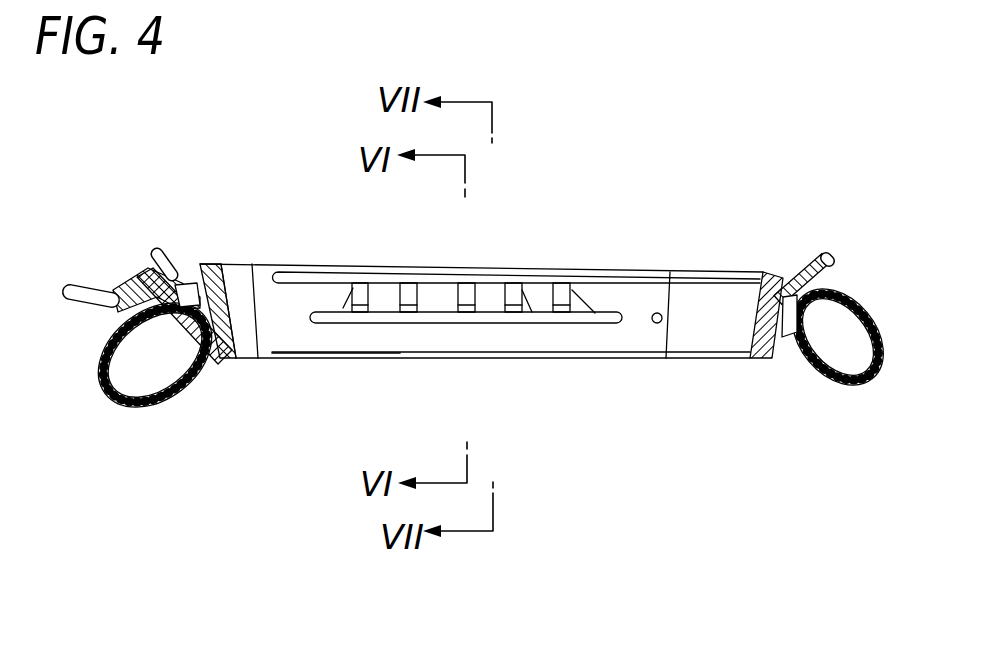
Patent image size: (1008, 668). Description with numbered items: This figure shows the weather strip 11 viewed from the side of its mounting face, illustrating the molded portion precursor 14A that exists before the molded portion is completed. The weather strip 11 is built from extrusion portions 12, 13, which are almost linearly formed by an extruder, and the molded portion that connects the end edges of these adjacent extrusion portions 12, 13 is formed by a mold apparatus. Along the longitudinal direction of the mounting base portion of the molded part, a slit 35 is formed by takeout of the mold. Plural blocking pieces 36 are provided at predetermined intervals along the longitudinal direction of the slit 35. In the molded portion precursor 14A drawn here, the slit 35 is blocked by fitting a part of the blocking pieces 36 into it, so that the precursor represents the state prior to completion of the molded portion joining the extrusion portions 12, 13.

The weather strip 11 is at (664, 182).
The extrusion portion 12 is at (148, 405).
The extrusion portion 13 is at (855, 386).
The molded portion precursor 14A is at (340, 360).
The slit 35 is at (595, 338).
The blocking pieces 36 is at (408, 288).